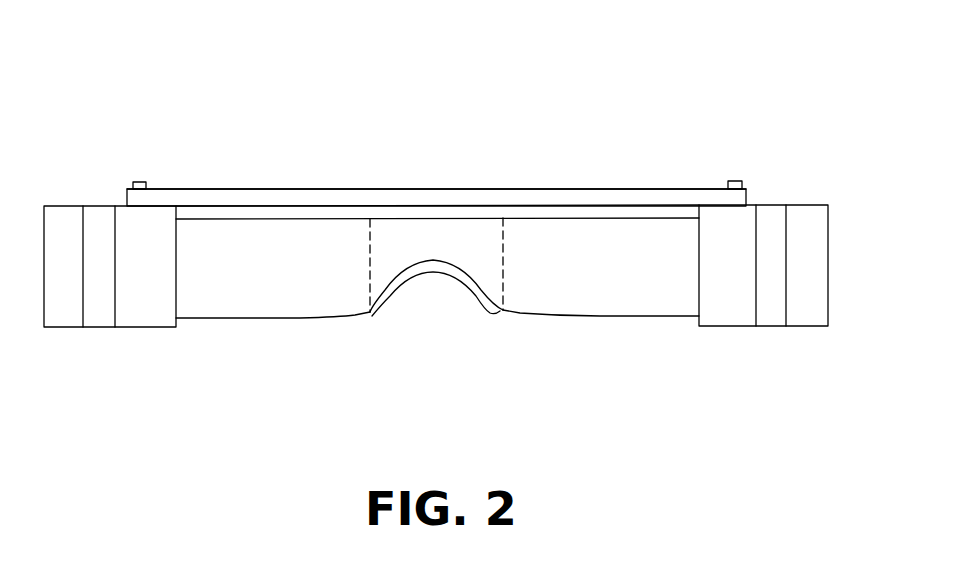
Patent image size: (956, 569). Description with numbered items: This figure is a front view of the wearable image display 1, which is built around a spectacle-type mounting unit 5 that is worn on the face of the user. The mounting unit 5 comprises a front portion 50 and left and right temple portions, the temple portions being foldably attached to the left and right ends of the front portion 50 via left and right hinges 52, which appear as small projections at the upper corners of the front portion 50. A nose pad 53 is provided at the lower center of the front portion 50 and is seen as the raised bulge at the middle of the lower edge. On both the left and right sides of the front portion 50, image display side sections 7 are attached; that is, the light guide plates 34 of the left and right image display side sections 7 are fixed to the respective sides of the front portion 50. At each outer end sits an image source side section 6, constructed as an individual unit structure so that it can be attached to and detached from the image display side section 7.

The wearable image display 1 is at (293, 130).
The mounting unit 5 is at (541, 187).
The front portion 50 is at (424, 193).
The hinges 52 is at (142, 181).
The image source side section 6 is at (128, 330).
The image display side section 7 is at (247, 302).
The light guide plates 34 is at (285, 312).
The nose pad 53 is at (398, 311).